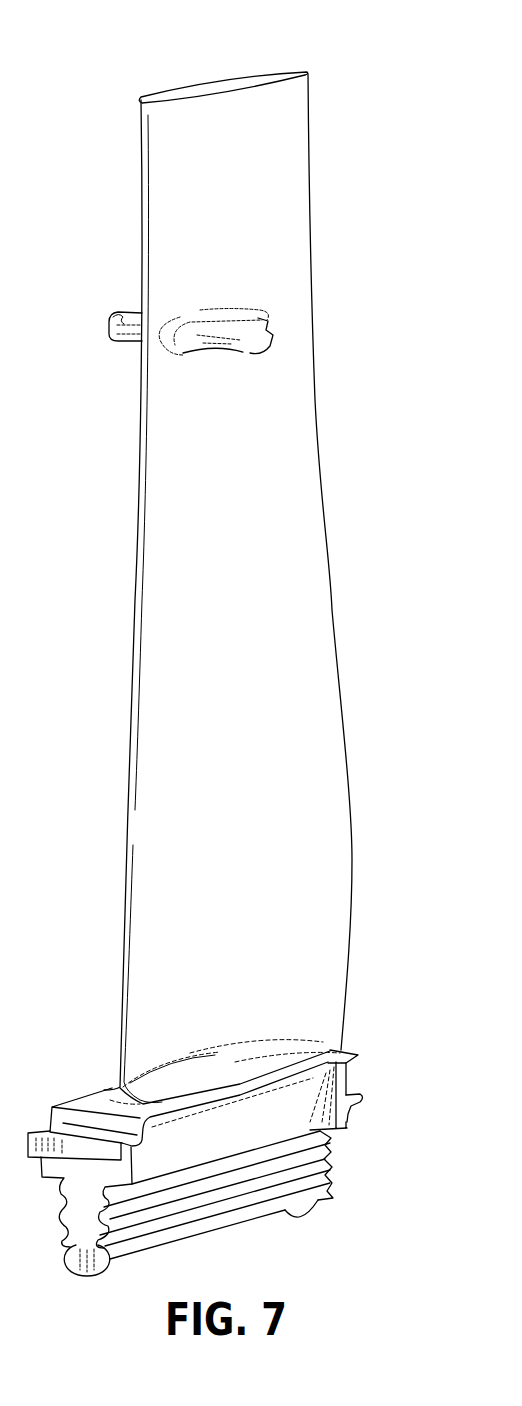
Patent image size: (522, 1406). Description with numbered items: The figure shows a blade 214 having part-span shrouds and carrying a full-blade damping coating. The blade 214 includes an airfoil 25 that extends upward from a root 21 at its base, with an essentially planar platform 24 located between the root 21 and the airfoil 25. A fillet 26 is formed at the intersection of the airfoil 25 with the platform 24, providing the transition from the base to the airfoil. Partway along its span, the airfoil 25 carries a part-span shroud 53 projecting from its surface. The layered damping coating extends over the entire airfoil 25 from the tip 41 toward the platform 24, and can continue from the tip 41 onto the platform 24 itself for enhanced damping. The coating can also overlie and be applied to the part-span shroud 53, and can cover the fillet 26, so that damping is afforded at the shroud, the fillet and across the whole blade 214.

The blade 214 is at (227, 641).
The tip 41 is at (233, 80).
The part-span shroud 53 is at (223, 342).
The airfoil 25 is at (198, 554).
The fillet 26 is at (313, 1047).
The platform 24 is at (218, 1063).
The root 21 is at (327, 1167).